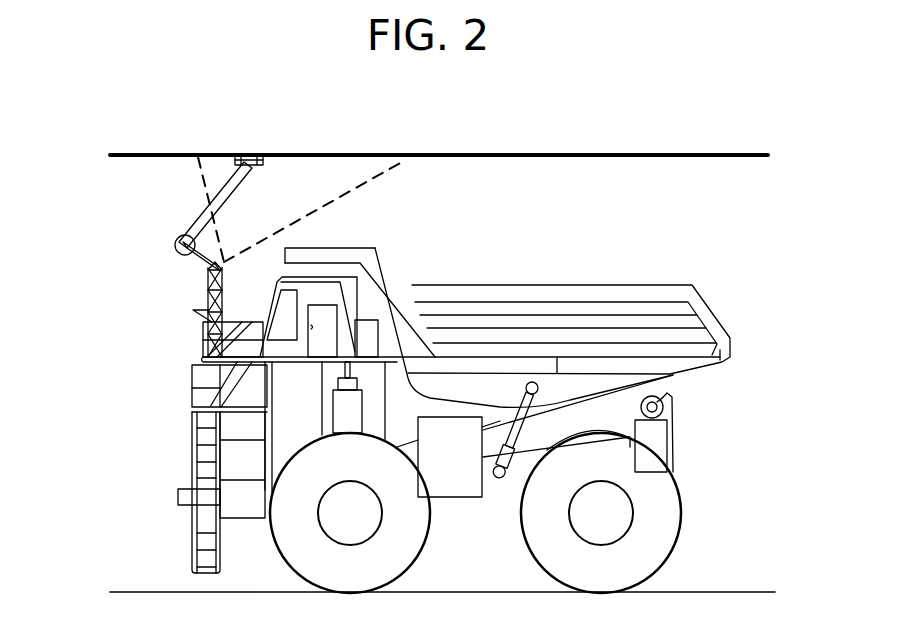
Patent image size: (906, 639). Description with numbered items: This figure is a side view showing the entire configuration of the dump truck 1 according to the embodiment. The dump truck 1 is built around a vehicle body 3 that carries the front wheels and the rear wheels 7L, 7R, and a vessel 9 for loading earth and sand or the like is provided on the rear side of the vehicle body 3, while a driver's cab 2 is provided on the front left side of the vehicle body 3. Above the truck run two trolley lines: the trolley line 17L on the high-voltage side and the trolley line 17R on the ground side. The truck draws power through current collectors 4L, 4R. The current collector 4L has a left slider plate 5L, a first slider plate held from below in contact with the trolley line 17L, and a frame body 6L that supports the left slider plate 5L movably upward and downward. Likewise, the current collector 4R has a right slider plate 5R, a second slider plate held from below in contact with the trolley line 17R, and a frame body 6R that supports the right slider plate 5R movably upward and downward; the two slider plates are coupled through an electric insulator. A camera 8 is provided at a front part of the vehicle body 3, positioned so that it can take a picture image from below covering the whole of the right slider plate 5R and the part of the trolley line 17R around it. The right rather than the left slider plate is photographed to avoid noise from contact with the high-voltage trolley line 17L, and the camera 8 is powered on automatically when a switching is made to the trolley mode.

The dump truck 1 is at (612, 232).
The driver's cab 2 is at (320, 293).
The vehicle body 3 is at (498, 482).
The current collector 4L is at (280, 188).
The current collector 4R is at (280, 188).
The left slider plate 5L is at (250, 155).
The right slider plate 5R is at (366, 130).
The frame body 6L is at (197, 213).
The frame body 6R is at (157, 216).
The rear wheel 7L is at (660, 515).
The rear wheel 7R is at (653, 513).
The camera 8 is at (222, 256).
The vessel 9 is at (502, 290).
The trolley line 17L is at (617, 153).
The trolley line 17R is at (446, 136).